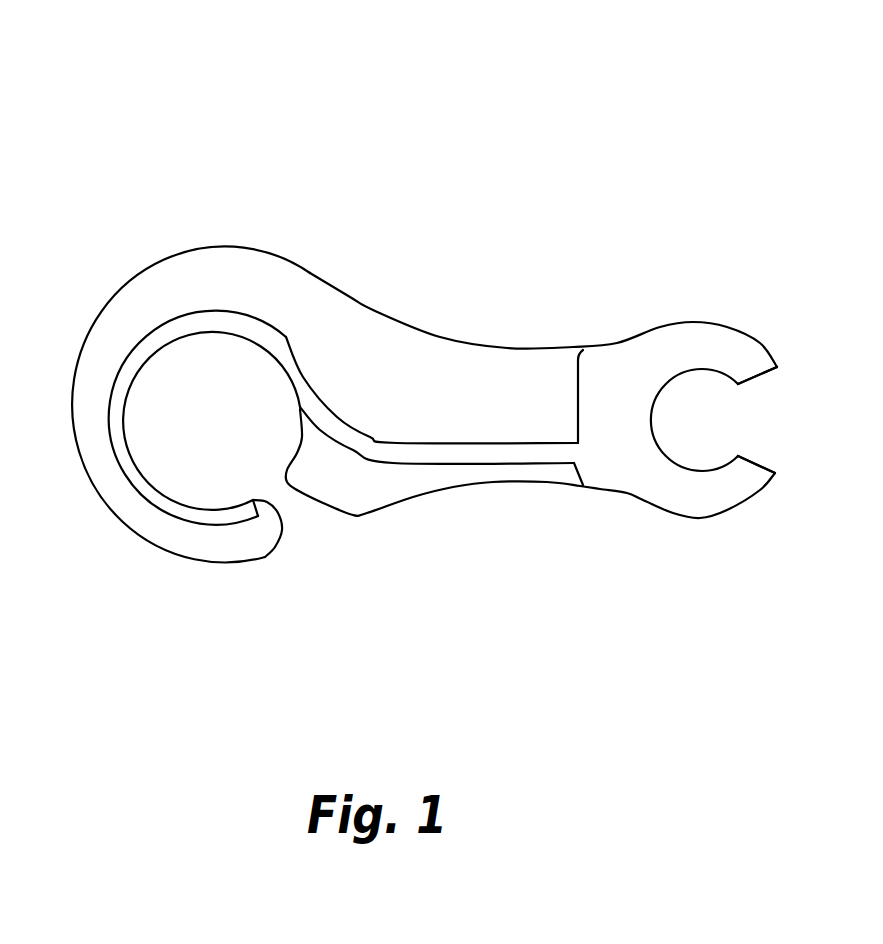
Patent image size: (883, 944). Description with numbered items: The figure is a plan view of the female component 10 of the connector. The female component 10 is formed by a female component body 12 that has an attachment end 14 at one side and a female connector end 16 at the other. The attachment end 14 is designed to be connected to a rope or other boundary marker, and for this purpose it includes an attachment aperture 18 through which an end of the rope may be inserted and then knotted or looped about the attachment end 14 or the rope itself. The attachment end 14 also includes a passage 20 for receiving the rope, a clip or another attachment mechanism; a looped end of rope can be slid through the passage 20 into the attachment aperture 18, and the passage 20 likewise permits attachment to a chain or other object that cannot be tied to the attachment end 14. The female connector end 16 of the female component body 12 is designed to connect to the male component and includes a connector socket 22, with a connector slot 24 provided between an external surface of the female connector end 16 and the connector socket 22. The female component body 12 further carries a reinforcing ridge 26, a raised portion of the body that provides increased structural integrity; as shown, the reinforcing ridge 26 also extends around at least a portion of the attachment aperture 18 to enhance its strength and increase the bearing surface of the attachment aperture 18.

The female component 10 is at (443, 273).
The female component body 12 is at (365, 357).
The attachment end 14 is at (197, 220).
The female connector end 16 is at (717, 303).
The attachment aperture 18 is at (182, 383).
The passage 20 is at (320, 530).
The connector socket 22 is at (708, 407).
The connector slot 24 is at (765, 440).
The reinforcing ridge 26 is at (497, 463).